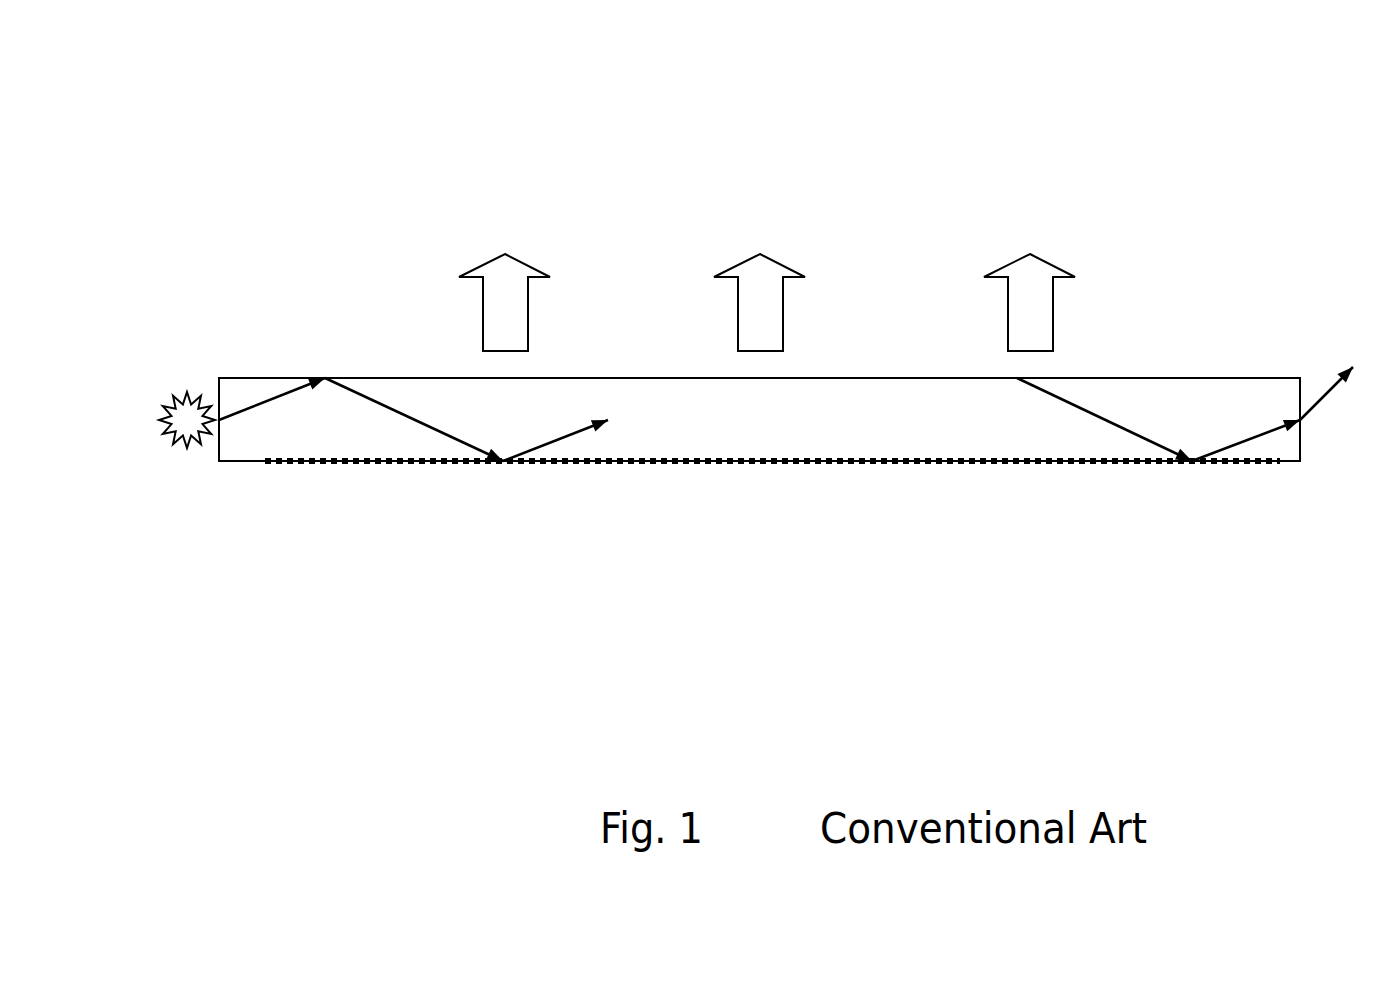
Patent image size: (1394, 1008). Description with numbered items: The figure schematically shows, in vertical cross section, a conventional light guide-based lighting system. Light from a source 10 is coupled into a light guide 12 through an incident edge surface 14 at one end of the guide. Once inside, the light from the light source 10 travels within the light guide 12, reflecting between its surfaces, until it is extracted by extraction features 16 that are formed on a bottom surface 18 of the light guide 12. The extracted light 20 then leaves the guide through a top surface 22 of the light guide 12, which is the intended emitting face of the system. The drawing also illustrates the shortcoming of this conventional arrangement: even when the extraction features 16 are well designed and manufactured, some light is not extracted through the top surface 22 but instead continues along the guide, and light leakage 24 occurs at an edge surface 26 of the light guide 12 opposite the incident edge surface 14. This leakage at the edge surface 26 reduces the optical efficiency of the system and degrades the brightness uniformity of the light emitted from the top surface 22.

The light source 10 is at (178, 405).
The light guide 12 is at (683, 166).
The incident edge surface 14 is at (217, 448).
The extraction features 16 is at (402, 462).
The bottom surface 18 is at (886, 475).
The extracted light 20 is at (503, 275).
The top surface 22 is at (946, 381).
The light leakage 24 is at (1322, 397).
The edge surface 26 is at (1305, 445).